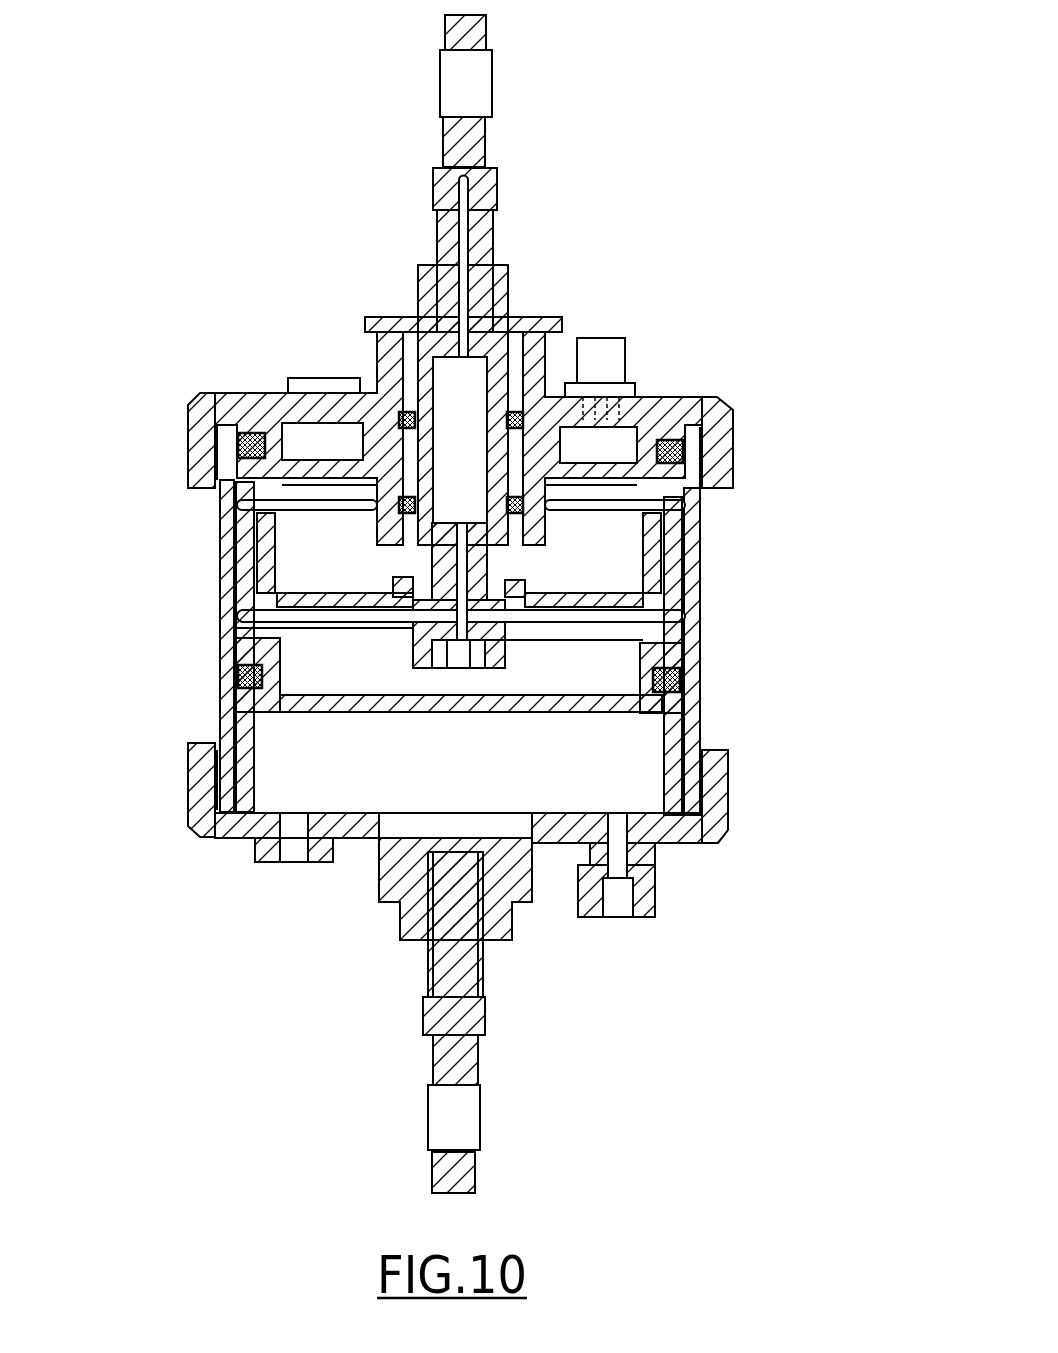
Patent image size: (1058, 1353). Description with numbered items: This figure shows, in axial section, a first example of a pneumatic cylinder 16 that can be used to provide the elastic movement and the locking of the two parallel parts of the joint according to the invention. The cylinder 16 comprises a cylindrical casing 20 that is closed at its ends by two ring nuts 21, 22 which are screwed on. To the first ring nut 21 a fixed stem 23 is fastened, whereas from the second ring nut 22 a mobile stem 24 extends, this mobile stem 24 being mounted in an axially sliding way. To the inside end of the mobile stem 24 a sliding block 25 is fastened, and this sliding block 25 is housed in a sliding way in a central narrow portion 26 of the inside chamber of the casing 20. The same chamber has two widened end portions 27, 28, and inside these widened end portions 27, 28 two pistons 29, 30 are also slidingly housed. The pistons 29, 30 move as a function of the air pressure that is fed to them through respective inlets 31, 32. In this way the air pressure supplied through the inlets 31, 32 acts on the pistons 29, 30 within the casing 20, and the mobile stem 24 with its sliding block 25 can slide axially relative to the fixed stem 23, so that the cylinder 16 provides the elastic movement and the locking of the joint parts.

The pneumatic cylinder 16 is at (680, 360).
The cylindrical casing 20 is at (215, 572).
The ring nut 21 is at (696, 832).
The ring nut 22 is at (330, 398).
The fixed stem 23 is at (465, 1012).
The mobile stem 24 is at (445, 248).
The sliding block 25 is at (650, 565).
The central narrow portion 26 is at (683, 598).
The widened end portion 27 is at (690, 715).
The widened end portion 28 is at (692, 467).
The piston 29 is at (580, 708).
The piston 30 is at (298, 465).
The inlet 31 is at (640, 912).
The inlet 32 is at (601, 357).